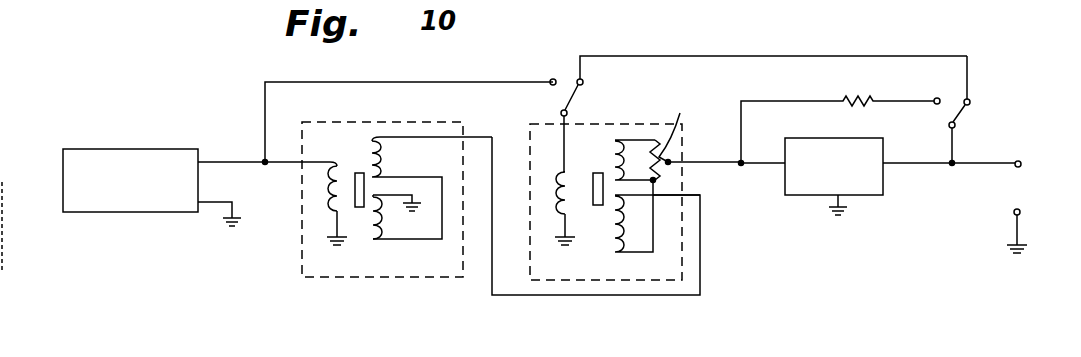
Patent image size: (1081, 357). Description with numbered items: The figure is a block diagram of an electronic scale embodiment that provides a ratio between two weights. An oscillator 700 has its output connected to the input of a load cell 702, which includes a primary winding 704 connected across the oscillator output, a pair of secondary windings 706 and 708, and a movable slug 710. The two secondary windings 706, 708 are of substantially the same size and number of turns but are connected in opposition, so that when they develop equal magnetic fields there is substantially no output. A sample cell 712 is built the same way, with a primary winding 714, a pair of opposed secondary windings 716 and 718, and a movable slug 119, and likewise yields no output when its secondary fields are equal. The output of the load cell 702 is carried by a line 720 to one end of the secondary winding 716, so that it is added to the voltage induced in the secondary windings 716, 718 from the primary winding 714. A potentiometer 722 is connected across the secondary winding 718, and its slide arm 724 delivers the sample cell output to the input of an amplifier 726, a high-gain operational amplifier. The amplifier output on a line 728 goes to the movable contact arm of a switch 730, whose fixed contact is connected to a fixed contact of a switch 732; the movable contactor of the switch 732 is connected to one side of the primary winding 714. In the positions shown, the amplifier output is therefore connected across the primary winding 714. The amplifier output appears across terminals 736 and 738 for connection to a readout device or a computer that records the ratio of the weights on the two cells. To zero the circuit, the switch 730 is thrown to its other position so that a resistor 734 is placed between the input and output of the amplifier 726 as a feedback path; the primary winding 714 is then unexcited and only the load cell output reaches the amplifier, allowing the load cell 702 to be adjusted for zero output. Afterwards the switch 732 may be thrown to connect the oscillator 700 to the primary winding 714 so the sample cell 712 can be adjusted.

The oscillator 700 is at (143, 149).
The load cell 702 is at (353, 283).
The primary winding 704 is at (335, 205).
The secondary winding 706 is at (385, 224).
The secondary winding 708 is at (388, 152).
The movable slug 710 is at (410, 145).
The sample cell 712 is at (585, 282).
The primary winding 714 is at (562, 212).
The secondary winding 716 is at (612, 240).
The secondary winding 718 is at (612, 148).
The transformer core 119 is at (592, 205).
The line 720 is at (500, 296).
The potentiometer 722 is at (681, 126).
The slide arm 724 is at (669, 160).
The amplifier 726 is at (800, 198).
The line 728 is at (913, 167).
The switch 730 is at (958, 118).
The switch 732 is at (573, 95).
The resistor 734 is at (876, 96).
The terminal 736 is at (1023, 159).
The terminal 738 is at (1013, 212).